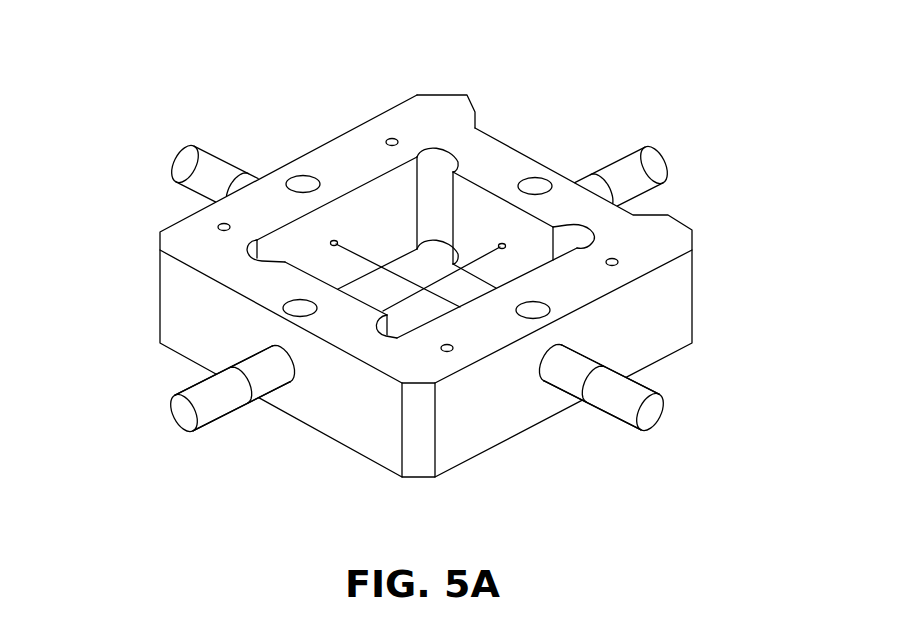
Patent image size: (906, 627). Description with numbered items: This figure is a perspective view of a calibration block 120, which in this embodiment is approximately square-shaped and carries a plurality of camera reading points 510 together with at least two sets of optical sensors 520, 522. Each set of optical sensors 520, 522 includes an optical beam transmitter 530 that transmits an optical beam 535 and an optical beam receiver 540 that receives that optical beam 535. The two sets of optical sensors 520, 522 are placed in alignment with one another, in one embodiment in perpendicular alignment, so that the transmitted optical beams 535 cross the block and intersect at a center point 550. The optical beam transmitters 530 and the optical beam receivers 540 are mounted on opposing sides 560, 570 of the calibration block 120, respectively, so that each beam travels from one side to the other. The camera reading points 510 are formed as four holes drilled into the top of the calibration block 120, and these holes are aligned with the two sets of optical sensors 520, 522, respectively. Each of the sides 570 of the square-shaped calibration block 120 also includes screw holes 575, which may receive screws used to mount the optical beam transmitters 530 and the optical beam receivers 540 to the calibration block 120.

The calibration block 120 is at (172, 97).
The camera reading points 510 is at (392, 138).
The set of optical sensors 520 is at (157, 381).
The set of optical sensors 522 is at (650, 460).
The optical beam transmitter 530 is at (172, 158).
The optical beam 535 is at (467, 263).
The optical beam receiver 540 is at (667, 157).
The center point 550 is at (418, 287).
The side 560 is at (360, 124).
The side 570 is at (628, 207).
The screw holes 575 is at (303, 176).